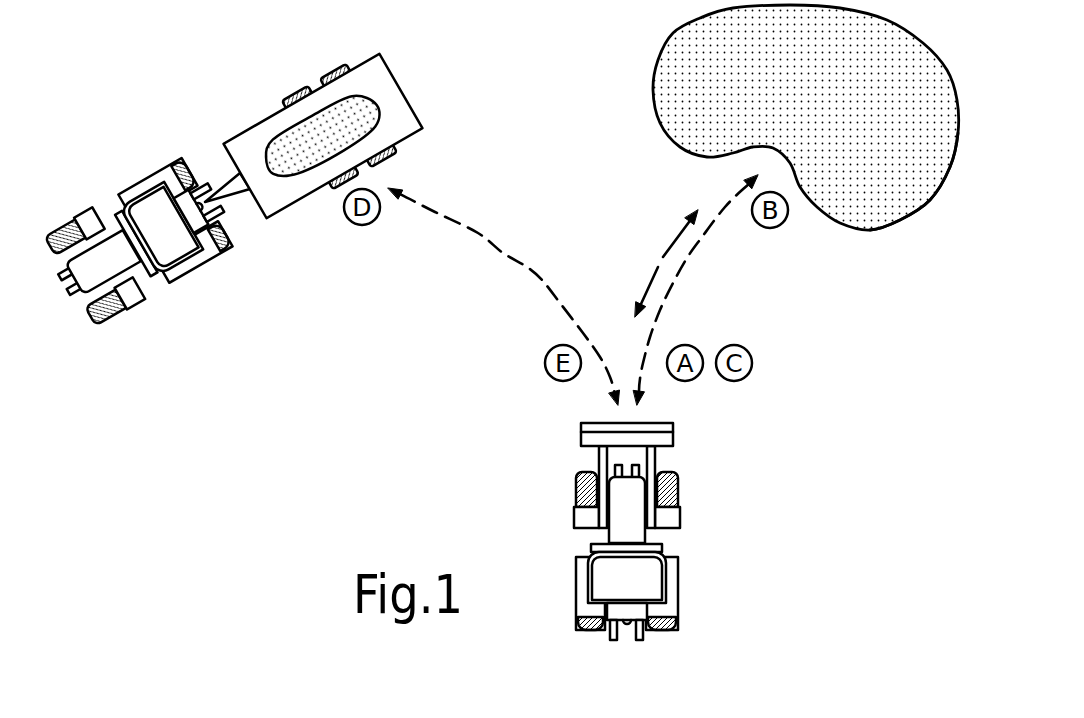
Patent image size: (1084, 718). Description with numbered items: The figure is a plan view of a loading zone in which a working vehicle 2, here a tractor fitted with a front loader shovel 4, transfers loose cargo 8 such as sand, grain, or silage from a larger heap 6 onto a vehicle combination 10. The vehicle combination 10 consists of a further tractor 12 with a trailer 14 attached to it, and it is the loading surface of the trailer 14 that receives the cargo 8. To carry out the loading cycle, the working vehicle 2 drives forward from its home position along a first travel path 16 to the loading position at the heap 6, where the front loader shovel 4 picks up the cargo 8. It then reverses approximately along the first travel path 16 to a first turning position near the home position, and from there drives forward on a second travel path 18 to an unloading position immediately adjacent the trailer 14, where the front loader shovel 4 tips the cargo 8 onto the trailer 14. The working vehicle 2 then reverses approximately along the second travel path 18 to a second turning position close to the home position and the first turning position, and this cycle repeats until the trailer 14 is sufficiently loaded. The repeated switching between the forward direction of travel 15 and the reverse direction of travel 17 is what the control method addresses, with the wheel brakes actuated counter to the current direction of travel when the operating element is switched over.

The working vehicle 2 is at (631, 531).
The front loader shovel 4 is at (580, 438).
The heap 6 is at (923, 203).
The cargo 8 is at (837, 106).
The vehicle combination 10 is at (238, 78).
The further tractor 12 is at (204, 262).
The trailer 14 is at (398, 80).
The forward direction of travel 15 is at (677, 237).
The first travel path 16 is at (687, 258).
The reverse direction of travel 17 is at (652, 280).
The second travel path 18 is at (502, 250).